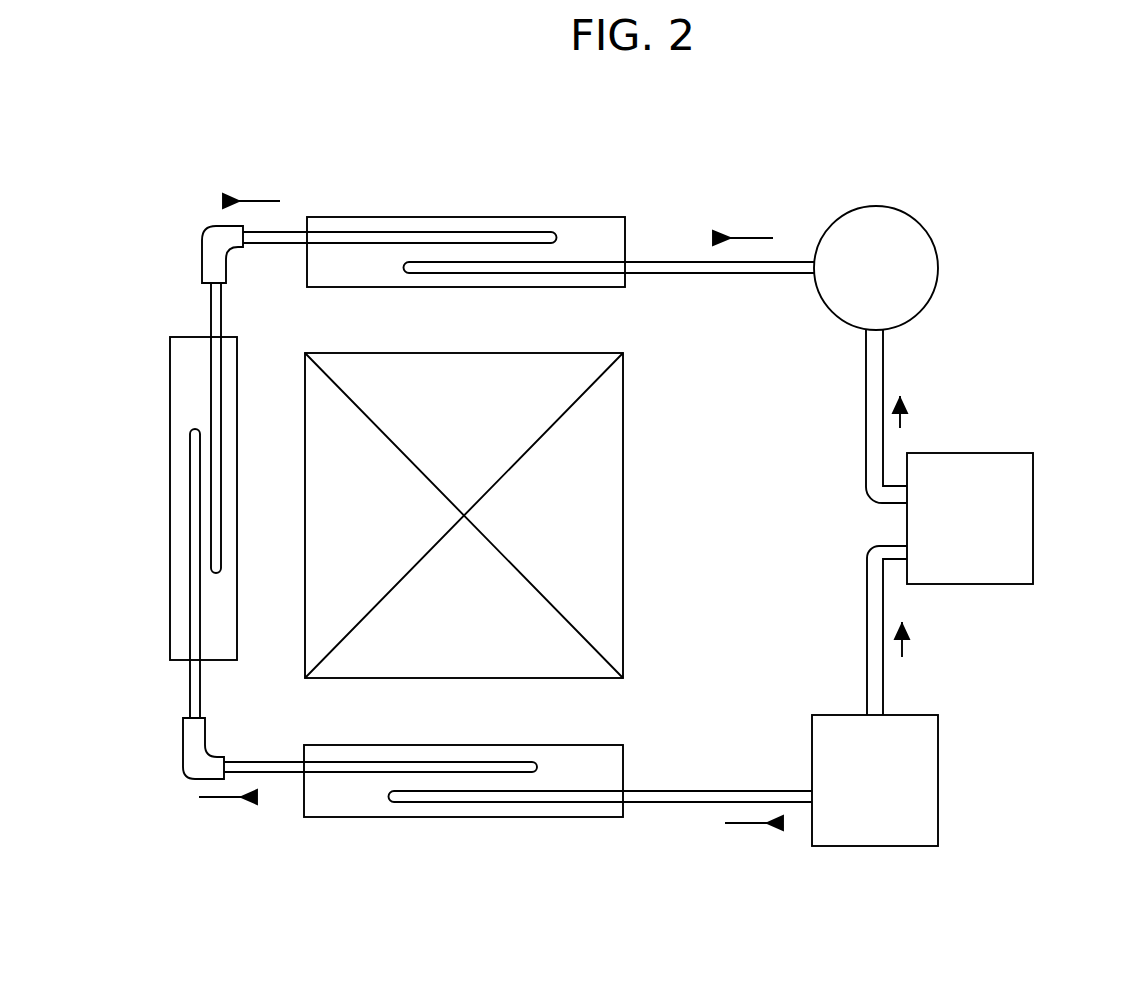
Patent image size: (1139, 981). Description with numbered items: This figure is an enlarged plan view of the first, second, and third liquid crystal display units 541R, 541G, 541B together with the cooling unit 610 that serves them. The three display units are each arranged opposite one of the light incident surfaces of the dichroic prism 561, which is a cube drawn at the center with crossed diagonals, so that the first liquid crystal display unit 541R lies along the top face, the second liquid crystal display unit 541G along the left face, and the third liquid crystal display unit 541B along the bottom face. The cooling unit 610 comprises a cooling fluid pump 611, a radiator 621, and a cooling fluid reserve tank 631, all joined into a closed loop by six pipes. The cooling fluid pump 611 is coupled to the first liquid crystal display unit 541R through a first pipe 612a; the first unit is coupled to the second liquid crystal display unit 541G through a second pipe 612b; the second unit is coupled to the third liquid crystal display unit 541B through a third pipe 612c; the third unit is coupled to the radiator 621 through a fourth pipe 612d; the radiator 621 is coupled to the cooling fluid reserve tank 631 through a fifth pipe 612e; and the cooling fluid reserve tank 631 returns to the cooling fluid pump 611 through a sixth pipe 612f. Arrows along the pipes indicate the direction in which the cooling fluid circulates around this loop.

The first liquid crystal display unit 541R is at (458, 215).
The second liquid crystal display unit 541G is at (170, 523).
The third liquid crystal display unit 541B is at (467, 817).
The dichroic prism 561 is at (625, 532).
The cooling unit 610 is at (680, 852).
The cooling fluid pump 611 is at (938, 270).
The first pipe 612a is at (663, 262).
The second pipe 612b is at (271, 247).
The third pipe 612c is at (257, 762).
The fourth pipe 612d is at (713, 792).
The fifth pipe 612e is at (867, 650).
The sixth pipe 612f is at (866, 418).
The radiator 621 is at (938, 783).
The cooling fluid reserve tank 631 is at (1033, 520).